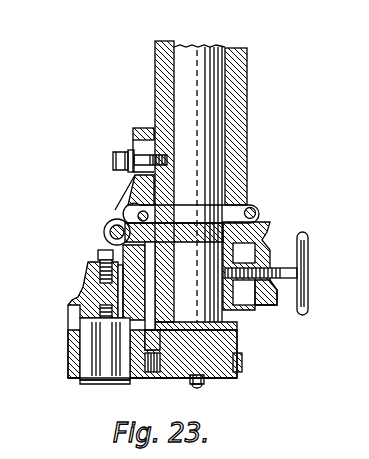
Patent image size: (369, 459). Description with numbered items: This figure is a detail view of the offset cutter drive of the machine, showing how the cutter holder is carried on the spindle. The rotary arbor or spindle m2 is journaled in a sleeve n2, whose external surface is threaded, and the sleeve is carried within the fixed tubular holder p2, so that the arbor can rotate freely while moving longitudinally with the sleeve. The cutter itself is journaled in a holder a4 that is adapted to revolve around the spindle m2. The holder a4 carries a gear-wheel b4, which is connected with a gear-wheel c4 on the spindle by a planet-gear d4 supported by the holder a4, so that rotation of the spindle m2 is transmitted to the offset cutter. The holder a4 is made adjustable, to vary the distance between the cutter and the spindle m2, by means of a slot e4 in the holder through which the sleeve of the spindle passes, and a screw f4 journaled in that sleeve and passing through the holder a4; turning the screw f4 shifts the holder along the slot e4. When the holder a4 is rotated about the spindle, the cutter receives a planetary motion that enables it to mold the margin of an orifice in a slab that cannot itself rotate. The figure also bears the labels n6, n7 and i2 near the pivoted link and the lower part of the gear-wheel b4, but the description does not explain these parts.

The rotary arbor m2 is at (218, 42).
The fixed tubular holder p2 is at (214, 185).
The link arm pivot n6 is at (266, 220).
The pivot pin n7 is at (104, 232).
The sleeve n2 is at (250, 266).
The screw f4 is at (310, 271).
The slot e4 is at (250, 306).
The planet-gear d4 is at (266, 306).
The holder a4 is at (80, 297).
The gear-wheel b4 is at (73, 362).
The gear-wheel c4 is at (244, 363).
The flange i2 is at (84, 390).